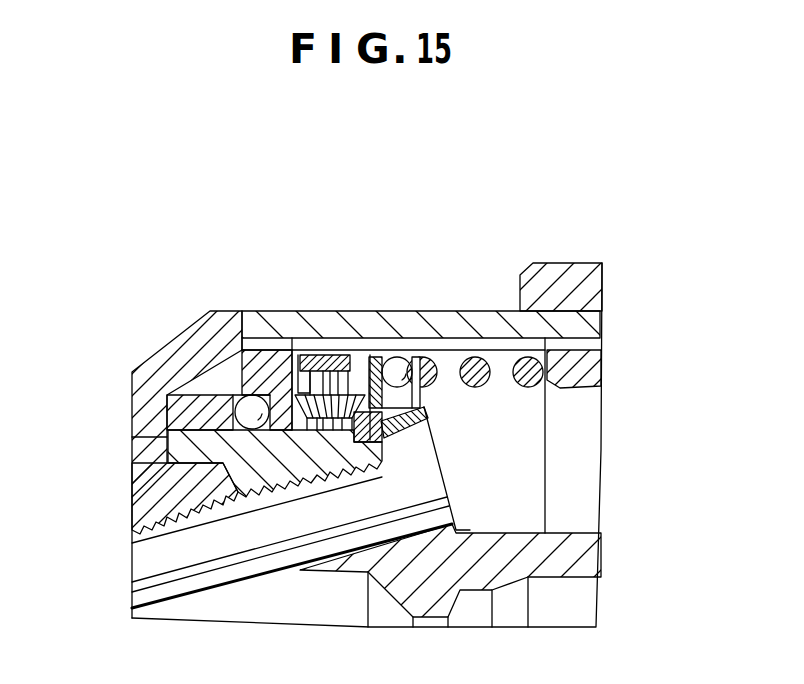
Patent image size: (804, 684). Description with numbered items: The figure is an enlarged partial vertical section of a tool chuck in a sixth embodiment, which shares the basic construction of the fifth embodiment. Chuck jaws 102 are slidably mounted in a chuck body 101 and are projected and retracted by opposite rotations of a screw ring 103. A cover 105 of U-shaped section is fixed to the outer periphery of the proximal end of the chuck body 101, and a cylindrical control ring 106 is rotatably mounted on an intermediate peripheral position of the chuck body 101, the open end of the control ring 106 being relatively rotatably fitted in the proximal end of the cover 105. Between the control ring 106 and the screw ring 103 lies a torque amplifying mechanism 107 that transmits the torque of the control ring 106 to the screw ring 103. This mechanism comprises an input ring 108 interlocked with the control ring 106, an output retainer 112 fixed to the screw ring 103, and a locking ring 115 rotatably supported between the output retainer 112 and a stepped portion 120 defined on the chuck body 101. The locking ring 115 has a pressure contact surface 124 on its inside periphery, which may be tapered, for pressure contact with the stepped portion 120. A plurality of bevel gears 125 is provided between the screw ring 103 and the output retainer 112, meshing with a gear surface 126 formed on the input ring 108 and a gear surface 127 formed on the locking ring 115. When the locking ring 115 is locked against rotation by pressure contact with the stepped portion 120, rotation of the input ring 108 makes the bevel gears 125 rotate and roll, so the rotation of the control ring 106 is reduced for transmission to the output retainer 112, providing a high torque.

The chuck body 101 is at (573, 540).
The chuck jaws 102 is at (158, 564).
The screw ring 103 is at (182, 448).
The cover 105 is at (562, 262).
The control ring 106 is at (186, 321).
The torque amplifying mechanism 107 is at (382, 323).
The input ring 108 is at (242, 328).
The output retainer 112 is at (289, 392).
The locking ring 115 is at (383, 406).
The stepped portion 120 is at (426, 409).
The pressure contact surface 124 is at (382, 436).
The bevel gears 125 is at (328, 372).
The gear surface 126 is at (263, 372).
The gear surface 127 is at (358, 392).